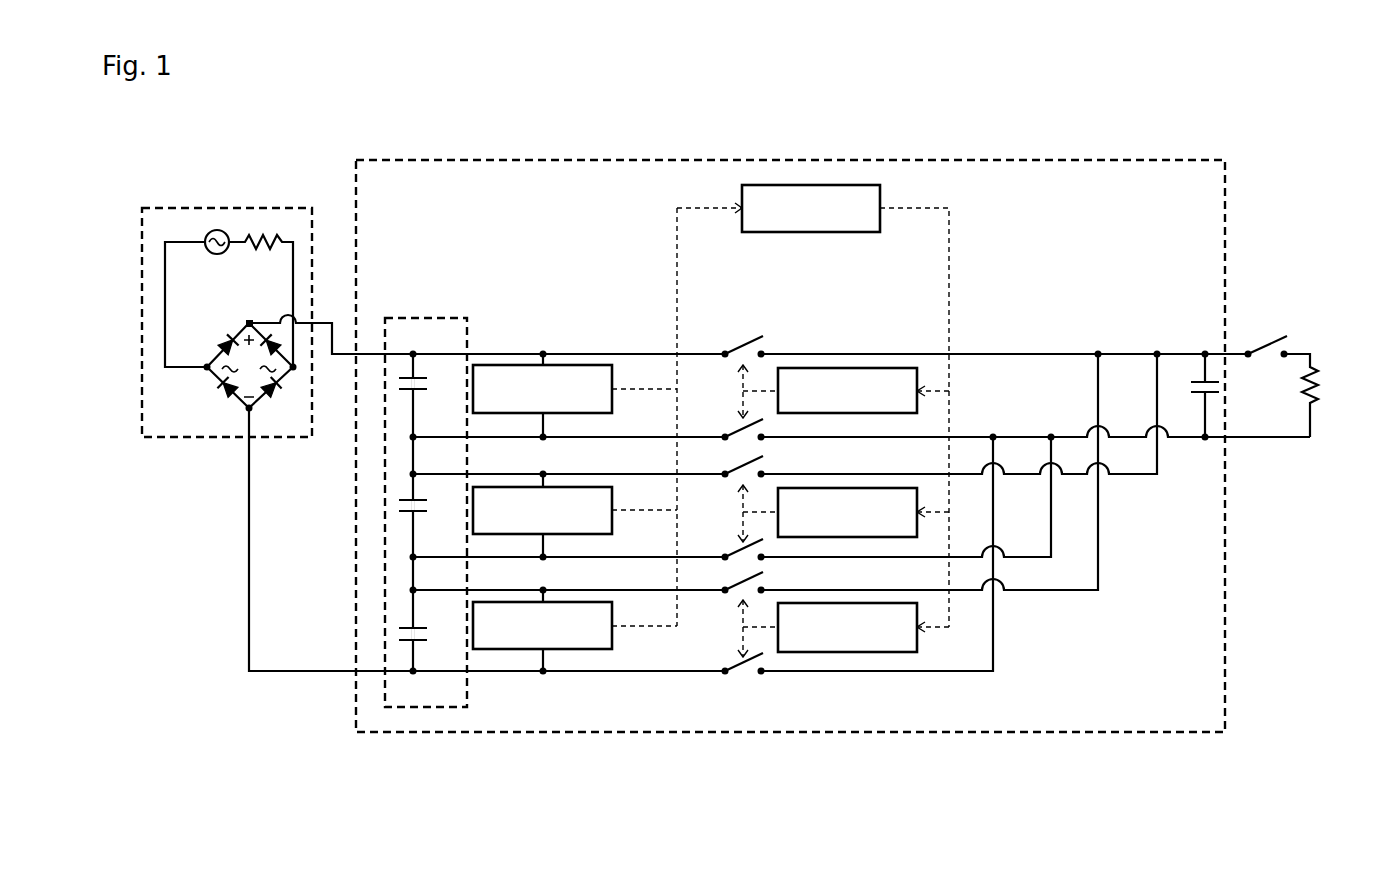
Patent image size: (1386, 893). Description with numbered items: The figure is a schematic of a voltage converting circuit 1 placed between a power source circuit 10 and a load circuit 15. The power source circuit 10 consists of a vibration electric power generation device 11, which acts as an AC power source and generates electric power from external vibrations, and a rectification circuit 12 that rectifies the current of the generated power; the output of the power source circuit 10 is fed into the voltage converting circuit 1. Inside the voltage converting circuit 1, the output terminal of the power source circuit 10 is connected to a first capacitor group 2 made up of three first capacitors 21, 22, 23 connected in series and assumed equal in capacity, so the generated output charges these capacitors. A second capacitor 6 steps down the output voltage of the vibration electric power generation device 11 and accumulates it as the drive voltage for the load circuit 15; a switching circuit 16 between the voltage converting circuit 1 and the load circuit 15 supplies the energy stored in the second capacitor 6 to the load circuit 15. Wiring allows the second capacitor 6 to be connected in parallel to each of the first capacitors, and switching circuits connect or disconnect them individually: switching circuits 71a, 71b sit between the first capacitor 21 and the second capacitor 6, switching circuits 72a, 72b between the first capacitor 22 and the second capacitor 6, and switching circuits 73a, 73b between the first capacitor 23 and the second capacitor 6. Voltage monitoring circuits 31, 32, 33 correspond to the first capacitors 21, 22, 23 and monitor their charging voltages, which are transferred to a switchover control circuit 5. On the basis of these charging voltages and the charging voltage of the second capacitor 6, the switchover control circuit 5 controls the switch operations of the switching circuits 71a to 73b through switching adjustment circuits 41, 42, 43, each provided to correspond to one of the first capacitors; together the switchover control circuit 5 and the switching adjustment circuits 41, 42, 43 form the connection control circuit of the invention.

The voltage converting circuit 1 is at (487, 160).
The power source circuit 10 is at (185, 208).
The vibration electric power generation device 11 is at (217, 255).
The rectification circuit 12 is at (228, 395).
The first capacitor group 2 is at (412, 318).
The first capacitor 21 is at (425, 386).
The first capacitor 22 is at (425, 508).
The first capacitor 23 is at (425, 636).
The voltage monitoring circuit 31 is at (612, 406).
The voltage monitoring circuit 32 is at (612, 527).
The voltage monitoring circuit 33 is at (612, 642).
The switching adjustment circuit 41 is at (917, 408).
The switching adjustment circuit 42 is at (917, 532).
The switching adjustment circuit 43 is at (917, 647).
The switchover control circuit 5 is at (880, 228).
The second capacitor 6 is at (1200, 395).
The load circuit 15 is at (1320, 392).
The switching circuit 16 is at (1258, 357).
The switching circuit 71a is at (743, 345).
The switching circuit 71b is at (735, 429).
The switching circuit 72a is at (738, 466).
The switching circuit 72b is at (735, 550).
The switching circuit 73a is at (738, 583).
The switching circuit 73b is at (735, 664).